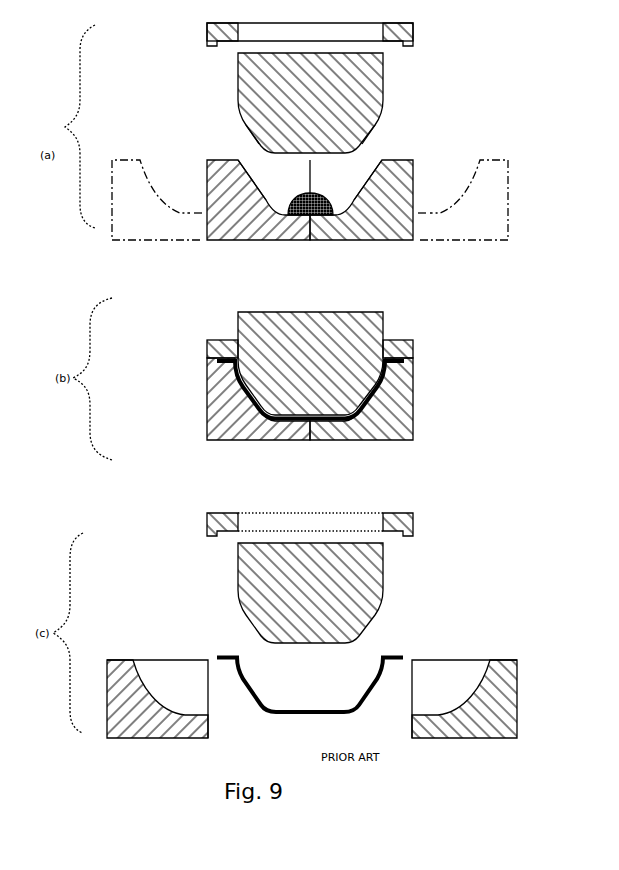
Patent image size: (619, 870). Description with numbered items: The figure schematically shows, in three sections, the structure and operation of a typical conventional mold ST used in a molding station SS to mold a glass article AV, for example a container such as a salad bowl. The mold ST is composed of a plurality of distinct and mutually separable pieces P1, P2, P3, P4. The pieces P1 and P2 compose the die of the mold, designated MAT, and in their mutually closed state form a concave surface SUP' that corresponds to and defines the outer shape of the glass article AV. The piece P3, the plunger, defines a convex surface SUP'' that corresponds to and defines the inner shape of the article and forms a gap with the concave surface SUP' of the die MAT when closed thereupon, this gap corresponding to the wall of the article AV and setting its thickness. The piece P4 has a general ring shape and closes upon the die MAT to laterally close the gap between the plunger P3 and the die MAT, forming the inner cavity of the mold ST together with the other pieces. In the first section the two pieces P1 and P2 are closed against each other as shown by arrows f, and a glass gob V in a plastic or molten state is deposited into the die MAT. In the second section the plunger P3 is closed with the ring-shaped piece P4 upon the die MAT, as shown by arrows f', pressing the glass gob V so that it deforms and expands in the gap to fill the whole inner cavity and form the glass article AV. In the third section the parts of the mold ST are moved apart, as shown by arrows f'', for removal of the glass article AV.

The die piece P1 is at (137, 221).
The die piece P2 is at (494, 723).
The plunger P3 is at (314, 104).
The ring-shaped piece P4 is at (205, 31).
The molding station SS is at (160, 94).
The mold ST is at (452, 122).
The die MAT is at (197, 151).
The concave surface SUP' is at (310, 181).
The convex surface SUP'' is at (313, 140).
The glass gob V is at (313, 198).
The glass article AV is at (232, 371).
The closing arrows f is at (309, 184).
The plunger closing arrows f' is at (311, 629).
The opening arrows f'' is at (310, 393).